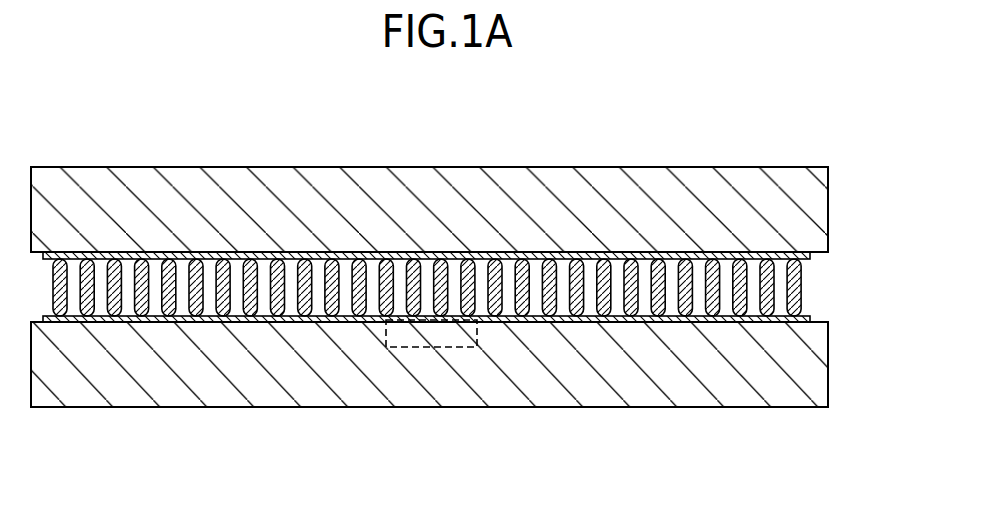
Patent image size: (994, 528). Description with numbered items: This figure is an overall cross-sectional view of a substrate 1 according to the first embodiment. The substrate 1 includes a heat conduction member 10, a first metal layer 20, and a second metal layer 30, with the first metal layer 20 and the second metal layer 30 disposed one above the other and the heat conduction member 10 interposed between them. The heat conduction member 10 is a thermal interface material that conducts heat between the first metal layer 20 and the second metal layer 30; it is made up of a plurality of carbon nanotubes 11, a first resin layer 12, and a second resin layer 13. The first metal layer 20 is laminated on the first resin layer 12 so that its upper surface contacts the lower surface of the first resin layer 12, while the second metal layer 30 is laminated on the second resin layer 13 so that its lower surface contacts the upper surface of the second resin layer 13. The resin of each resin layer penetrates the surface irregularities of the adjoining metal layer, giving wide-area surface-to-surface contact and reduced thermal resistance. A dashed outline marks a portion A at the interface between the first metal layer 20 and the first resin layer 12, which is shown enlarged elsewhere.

The substrate 1 is at (57, 128).
The heat conduction member 10 is at (486, 288).
The carbon nanotubes 11 is at (795, 290).
The first resin layer 12 is at (460, 322).
The second resin layer 13 is at (808, 255).
The first metal layer 20 is at (810, 363).
The second metal layer 30 is at (810, 207).
The portion A is at (430, 347).